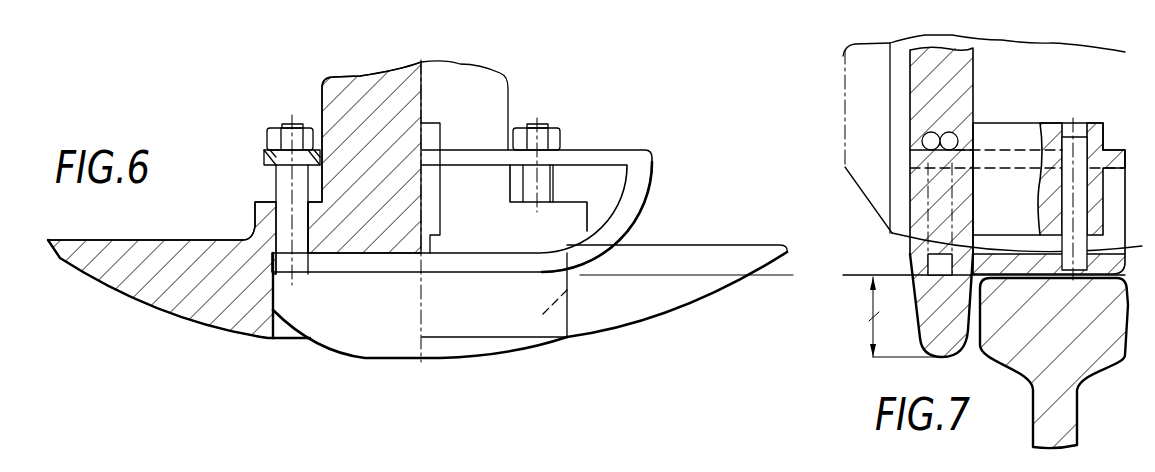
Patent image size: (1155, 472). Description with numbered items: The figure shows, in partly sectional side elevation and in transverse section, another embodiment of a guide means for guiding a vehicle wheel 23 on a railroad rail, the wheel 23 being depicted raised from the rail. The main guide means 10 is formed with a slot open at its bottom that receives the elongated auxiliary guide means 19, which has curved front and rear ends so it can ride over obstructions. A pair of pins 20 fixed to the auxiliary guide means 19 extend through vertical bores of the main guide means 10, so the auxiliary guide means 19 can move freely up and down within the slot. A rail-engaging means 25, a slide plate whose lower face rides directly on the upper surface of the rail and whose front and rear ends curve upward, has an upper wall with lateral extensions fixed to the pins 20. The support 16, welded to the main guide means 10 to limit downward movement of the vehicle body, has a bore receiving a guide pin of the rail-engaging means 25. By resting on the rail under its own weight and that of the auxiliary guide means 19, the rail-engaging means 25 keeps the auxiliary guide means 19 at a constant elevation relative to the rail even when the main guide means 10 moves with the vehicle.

In FIG. 6, the main guide means 10 is at (193, 318).
In FIG. 7, the main guide means 10 is at (925, 92).
In FIG. 6, the auxiliary guide means 19 is at (393, 338).
In FIG. 7, the auxiliary guide means 19 is at (937, 330).
In FIG. 6, the pins 20 is at (300, 471).
In FIG. 6, the rail-engaging means 25 is at (625, 207).
In FIG. 7, the vehicle wheel 23 is at (857, 61).
In FIG. 7, the support 16 is at (998, 178).